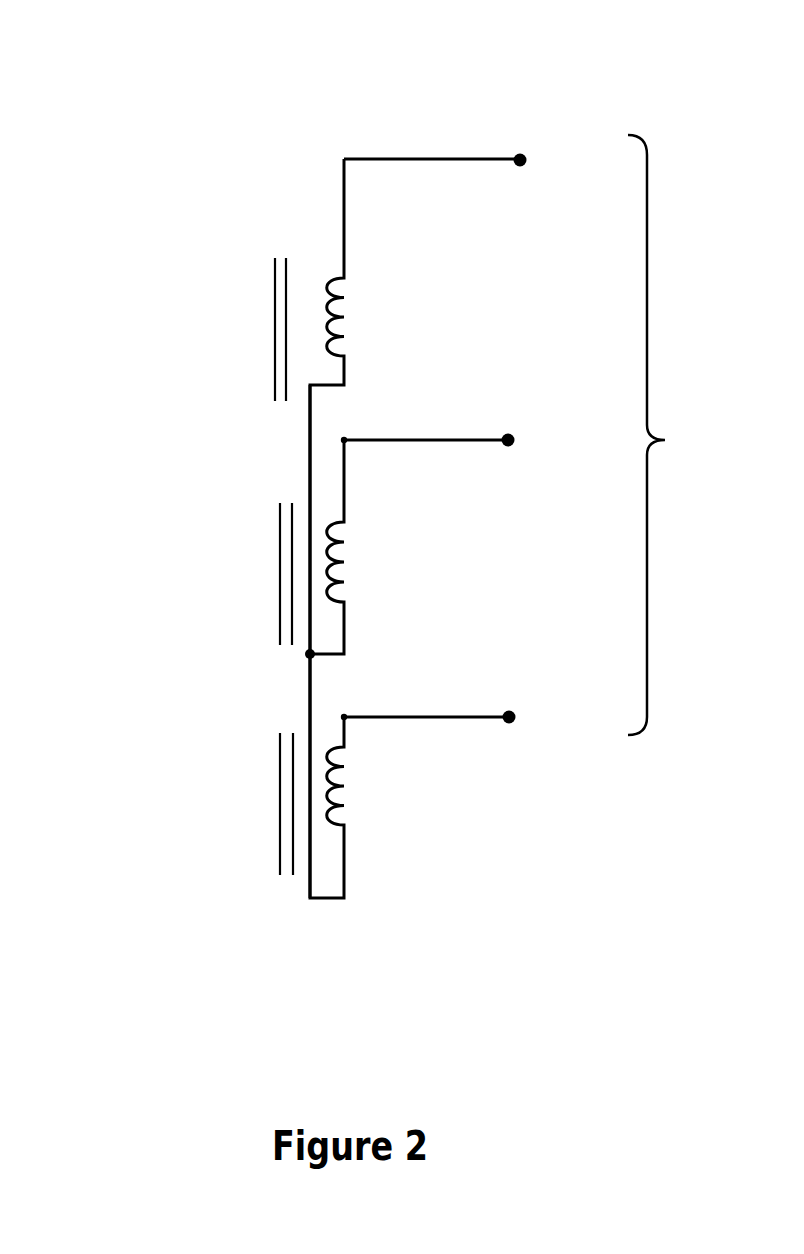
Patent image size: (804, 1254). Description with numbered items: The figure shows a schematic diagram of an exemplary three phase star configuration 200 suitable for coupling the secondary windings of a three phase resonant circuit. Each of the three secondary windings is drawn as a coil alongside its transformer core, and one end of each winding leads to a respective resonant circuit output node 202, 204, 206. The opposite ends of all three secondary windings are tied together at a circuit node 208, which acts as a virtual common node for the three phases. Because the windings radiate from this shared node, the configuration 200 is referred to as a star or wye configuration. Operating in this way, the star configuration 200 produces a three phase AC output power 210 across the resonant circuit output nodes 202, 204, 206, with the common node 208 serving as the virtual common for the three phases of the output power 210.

The three phase star configuration 200 is at (213, 74).
The resonant circuit output node 202 is at (467, 157).
The resonant circuit output node 204 is at (465, 438).
The resonant circuit output node 206 is at (465, 715).
The circuit node 208 is at (310, 654).
The three phase AC output power 210 is at (680, 435).